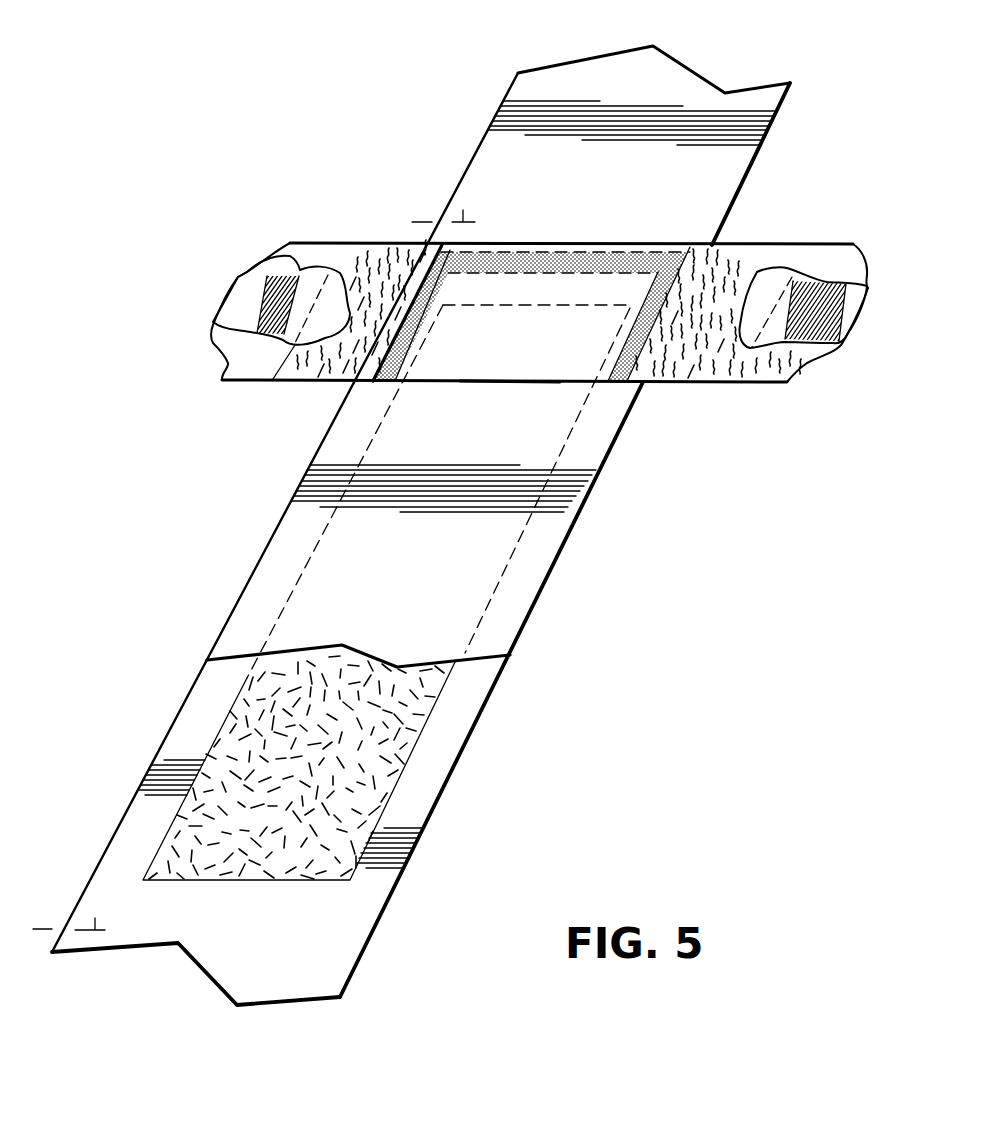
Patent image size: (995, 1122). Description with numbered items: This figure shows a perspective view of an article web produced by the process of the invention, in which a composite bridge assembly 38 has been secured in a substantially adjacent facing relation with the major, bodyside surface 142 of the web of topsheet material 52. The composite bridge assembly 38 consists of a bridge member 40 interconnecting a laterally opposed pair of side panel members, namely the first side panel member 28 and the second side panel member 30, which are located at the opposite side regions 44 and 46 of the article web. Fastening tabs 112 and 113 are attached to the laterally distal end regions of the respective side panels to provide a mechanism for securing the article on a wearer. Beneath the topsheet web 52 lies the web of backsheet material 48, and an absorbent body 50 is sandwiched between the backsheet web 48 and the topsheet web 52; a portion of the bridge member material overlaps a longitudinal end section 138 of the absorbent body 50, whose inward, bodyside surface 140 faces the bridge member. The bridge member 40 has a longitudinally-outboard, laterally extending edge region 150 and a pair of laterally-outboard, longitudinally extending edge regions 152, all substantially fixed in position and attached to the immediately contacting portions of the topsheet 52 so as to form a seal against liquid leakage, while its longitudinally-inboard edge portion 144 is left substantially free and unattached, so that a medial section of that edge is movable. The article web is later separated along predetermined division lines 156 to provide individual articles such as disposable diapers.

The first side panel member 28 is at (771, 256).
The second side panel member 30 is at (387, 242).
The composite bridge assembly 38 is at (294, 240).
The bridge member 40 is at (570, 243).
The side region of the article web 44 is at (537, 608).
The side region of the article web 46 is at (240, 593).
The web of backsheet material 48 is at (205, 712).
The absorbent body 50 is at (407, 735).
The web of topsheet material 52 is at (520, 580).
The fastening tab 112 is at (847, 343).
The fastening tab 113 is at (219, 367).
The longitudinal end section of the absorbent body 138 is at (512, 357).
The bodyside surface of the absorbent body 140 is at (285, 868).
The bodyside surface of the topsheet web 142 is at (493, 538).
The longitudinally-inboard edge portion of the bridge member 144 is at (513, 382).
The longitudinally-outboard edge region of the bridge member 150 is at (640, 263).
The laterally-outboard edge regions of the bridge member 152 is at (403, 340).
The division lines 156 is at (472, 204).